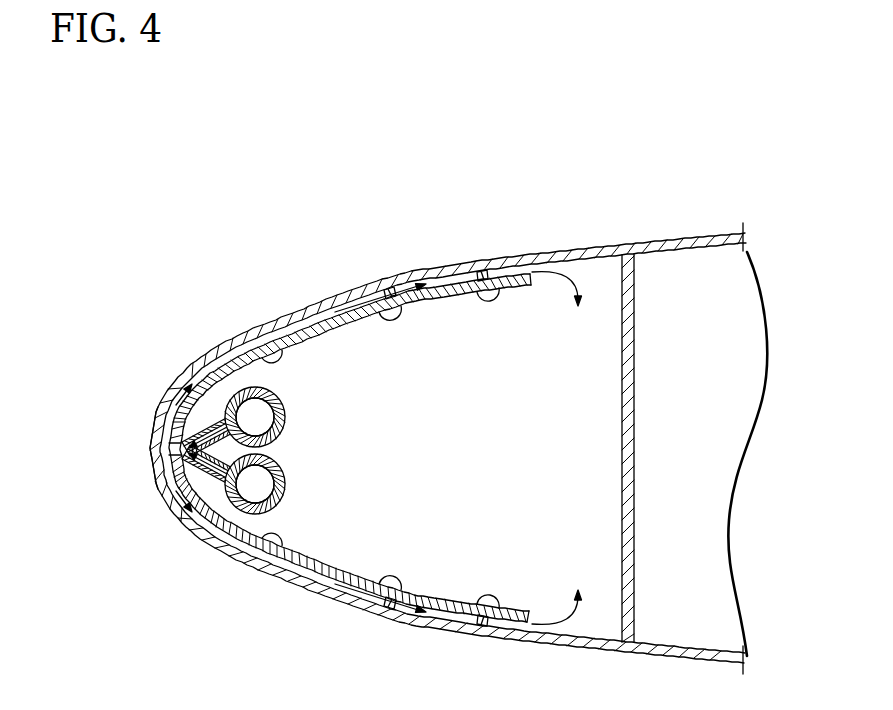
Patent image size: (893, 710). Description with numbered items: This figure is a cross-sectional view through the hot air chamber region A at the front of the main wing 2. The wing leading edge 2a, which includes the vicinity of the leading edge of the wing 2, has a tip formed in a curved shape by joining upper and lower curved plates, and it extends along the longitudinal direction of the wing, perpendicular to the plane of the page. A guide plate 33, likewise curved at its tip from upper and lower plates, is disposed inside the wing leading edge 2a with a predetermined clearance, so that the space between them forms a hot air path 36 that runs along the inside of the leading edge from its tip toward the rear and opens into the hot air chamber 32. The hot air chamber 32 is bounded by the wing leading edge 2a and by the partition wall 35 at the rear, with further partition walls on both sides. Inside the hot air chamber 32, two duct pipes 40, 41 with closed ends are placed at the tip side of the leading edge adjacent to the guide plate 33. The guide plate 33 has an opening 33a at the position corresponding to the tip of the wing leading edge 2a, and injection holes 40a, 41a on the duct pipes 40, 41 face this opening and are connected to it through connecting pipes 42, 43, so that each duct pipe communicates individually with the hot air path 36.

The main wing 2 is at (677, 235).
The wing leading edge 2a is at (157, 413).
The hot air chamber 32 is at (508, 450).
The guide plate 33 is at (440, 292).
The opening 33a is at (178, 450).
The partition wall 35 is at (636, 447).
The hot air path 36 is at (298, 326).
The duct pipe 40 is at (285, 412).
The injection hole 40a is at (253, 418).
The duct pipe 41 is at (286, 482).
The injection hole 41a is at (253, 485).
The connecting pipe 42 is at (213, 423).
The connecting pipe 43 is at (217, 480).
The leading edge region A is at (733, 140).